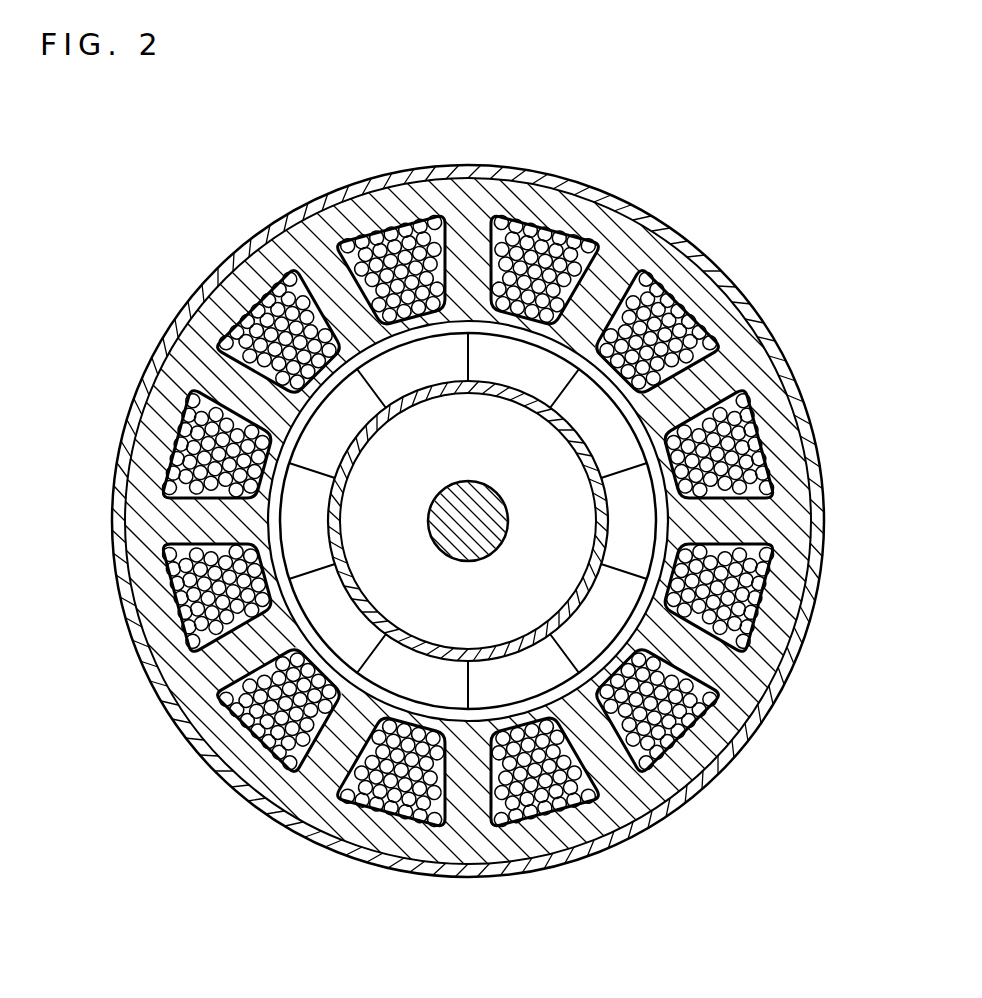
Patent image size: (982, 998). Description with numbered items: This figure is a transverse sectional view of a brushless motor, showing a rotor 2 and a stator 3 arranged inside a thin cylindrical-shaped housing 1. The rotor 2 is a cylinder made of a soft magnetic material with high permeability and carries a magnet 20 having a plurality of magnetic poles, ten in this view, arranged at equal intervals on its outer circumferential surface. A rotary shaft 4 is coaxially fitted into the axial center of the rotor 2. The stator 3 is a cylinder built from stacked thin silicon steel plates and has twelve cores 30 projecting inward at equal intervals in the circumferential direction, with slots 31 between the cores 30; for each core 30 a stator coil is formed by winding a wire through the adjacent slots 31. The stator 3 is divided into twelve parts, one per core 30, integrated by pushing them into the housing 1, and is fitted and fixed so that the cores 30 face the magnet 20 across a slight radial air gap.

The housing 1 is at (580, 186).
The rotor 2 is at (362, 672).
The stator 3 is at (718, 725).
The rotary shaft 4 is at (465, 560).
The magnet 20 is at (280, 527).
The cores 30 is at (660, 278).
The slots 31 is at (697, 307).